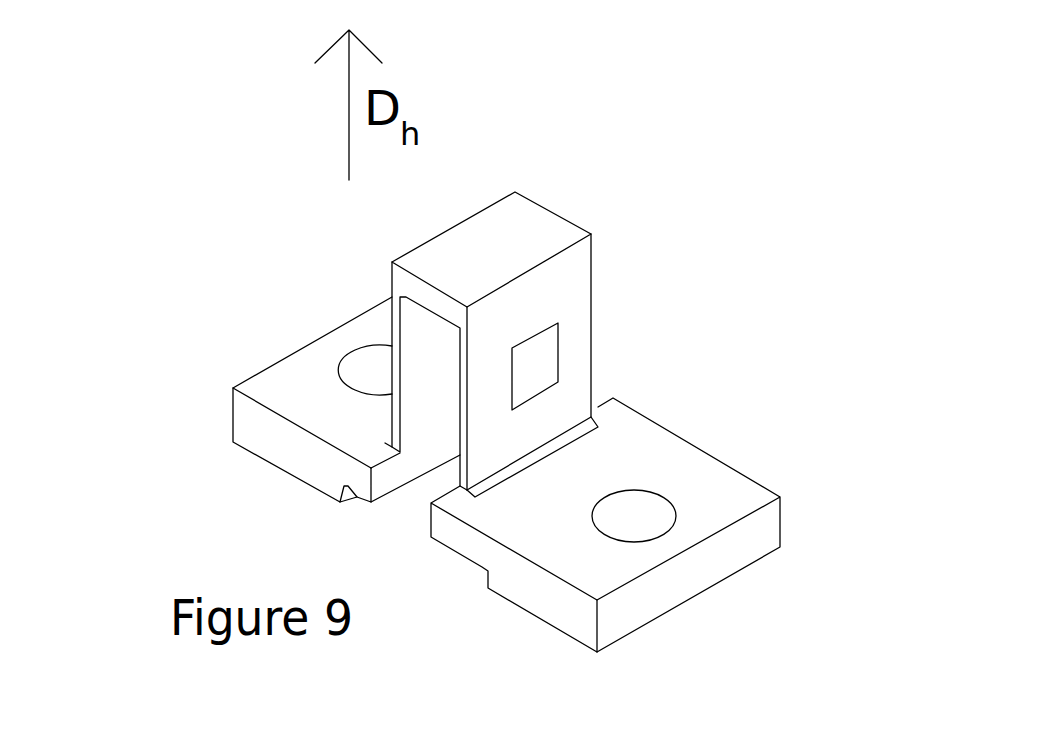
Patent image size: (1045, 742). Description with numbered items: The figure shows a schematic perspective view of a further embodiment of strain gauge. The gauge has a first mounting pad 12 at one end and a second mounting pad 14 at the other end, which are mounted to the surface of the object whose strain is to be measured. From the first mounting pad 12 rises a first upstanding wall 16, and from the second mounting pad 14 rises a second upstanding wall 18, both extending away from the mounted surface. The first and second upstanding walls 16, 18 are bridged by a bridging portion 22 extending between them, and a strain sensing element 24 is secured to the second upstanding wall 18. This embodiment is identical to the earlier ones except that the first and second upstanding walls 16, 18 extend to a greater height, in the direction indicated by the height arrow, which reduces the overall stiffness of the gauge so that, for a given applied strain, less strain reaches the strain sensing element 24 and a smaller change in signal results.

The first mounting pad 12 is at (282, 385).
The second mounting pad 14 is at (728, 495).
The first upstanding wall 16 is at (390, 338).
The second upstanding wall 18 is at (569, 280).
The bridging portion 22 is at (492, 257).
The strain sensing element 24 is at (535, 363).